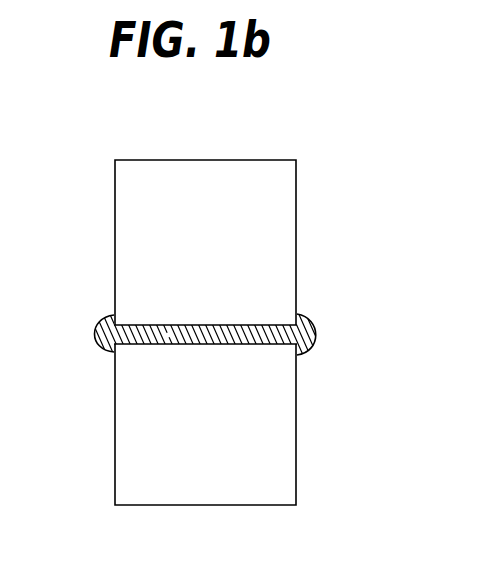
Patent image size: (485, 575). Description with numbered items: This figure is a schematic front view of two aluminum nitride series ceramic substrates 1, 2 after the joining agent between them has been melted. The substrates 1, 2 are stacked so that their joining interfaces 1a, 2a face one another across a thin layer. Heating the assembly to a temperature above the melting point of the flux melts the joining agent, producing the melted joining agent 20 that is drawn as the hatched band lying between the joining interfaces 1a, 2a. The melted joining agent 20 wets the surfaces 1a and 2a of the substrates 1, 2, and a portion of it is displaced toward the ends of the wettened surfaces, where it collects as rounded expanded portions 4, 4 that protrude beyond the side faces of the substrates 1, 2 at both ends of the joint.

The substrate 1 is at (263, 223).
The substrate 2 is at (262, 445).
The joining interface 1a is at (136, 325).
The joining interface 2a is at (160, 344).
The expanded portion 4 is at (314, 325).
The melted joining agent 20 is at (223, 346).